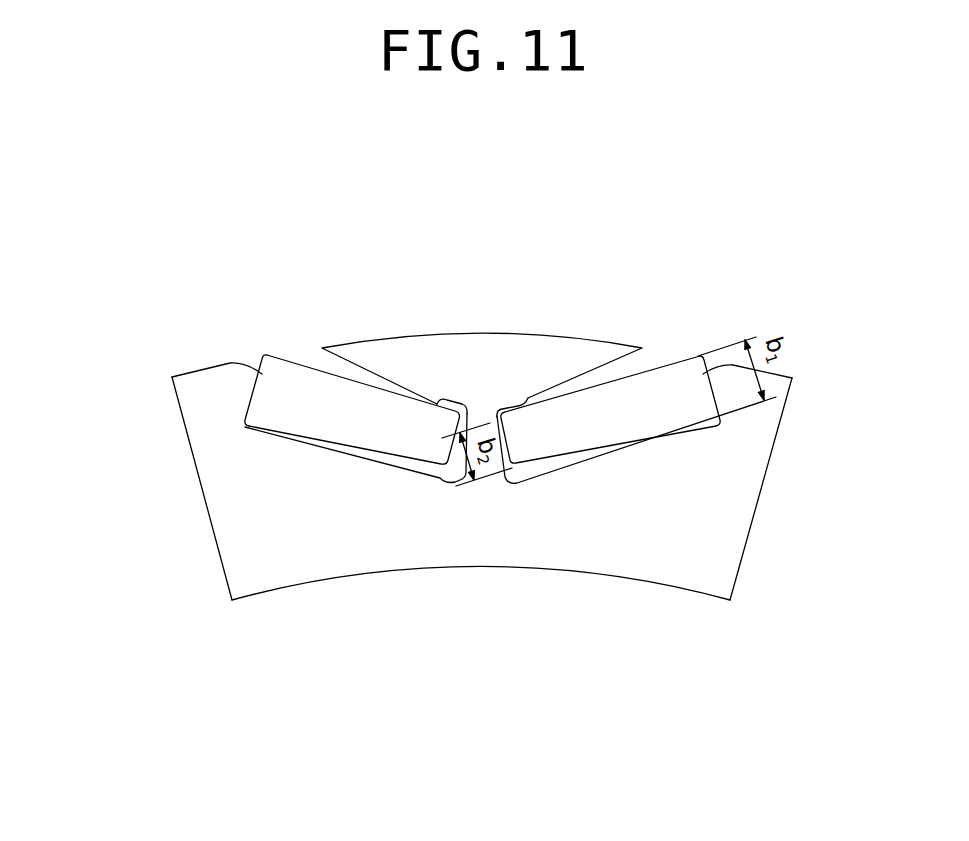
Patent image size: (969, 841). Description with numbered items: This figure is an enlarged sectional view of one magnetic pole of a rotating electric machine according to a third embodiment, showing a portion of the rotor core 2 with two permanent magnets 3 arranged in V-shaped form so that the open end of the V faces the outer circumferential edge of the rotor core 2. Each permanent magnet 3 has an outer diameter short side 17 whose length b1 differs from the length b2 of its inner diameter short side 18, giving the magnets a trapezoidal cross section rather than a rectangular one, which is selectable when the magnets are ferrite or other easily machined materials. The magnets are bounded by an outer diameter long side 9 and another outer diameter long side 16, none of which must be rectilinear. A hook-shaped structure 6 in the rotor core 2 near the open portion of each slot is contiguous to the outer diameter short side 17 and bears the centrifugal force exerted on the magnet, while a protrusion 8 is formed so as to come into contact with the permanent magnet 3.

The rotor core 2 is at (258, 563).
The permanent magnet 3 is at (293, 380).
The hook-shaped structure 6 is at (240, 380).
The protrusion 8 is at (443, 400).
The outer diameter long side 9 is at (347, 380).
The outer diameter long side 16 is at (337, 443).
The outer diameter short side 17 is at (250, 397).
The inner diameter short side 18 is at (517, 453).